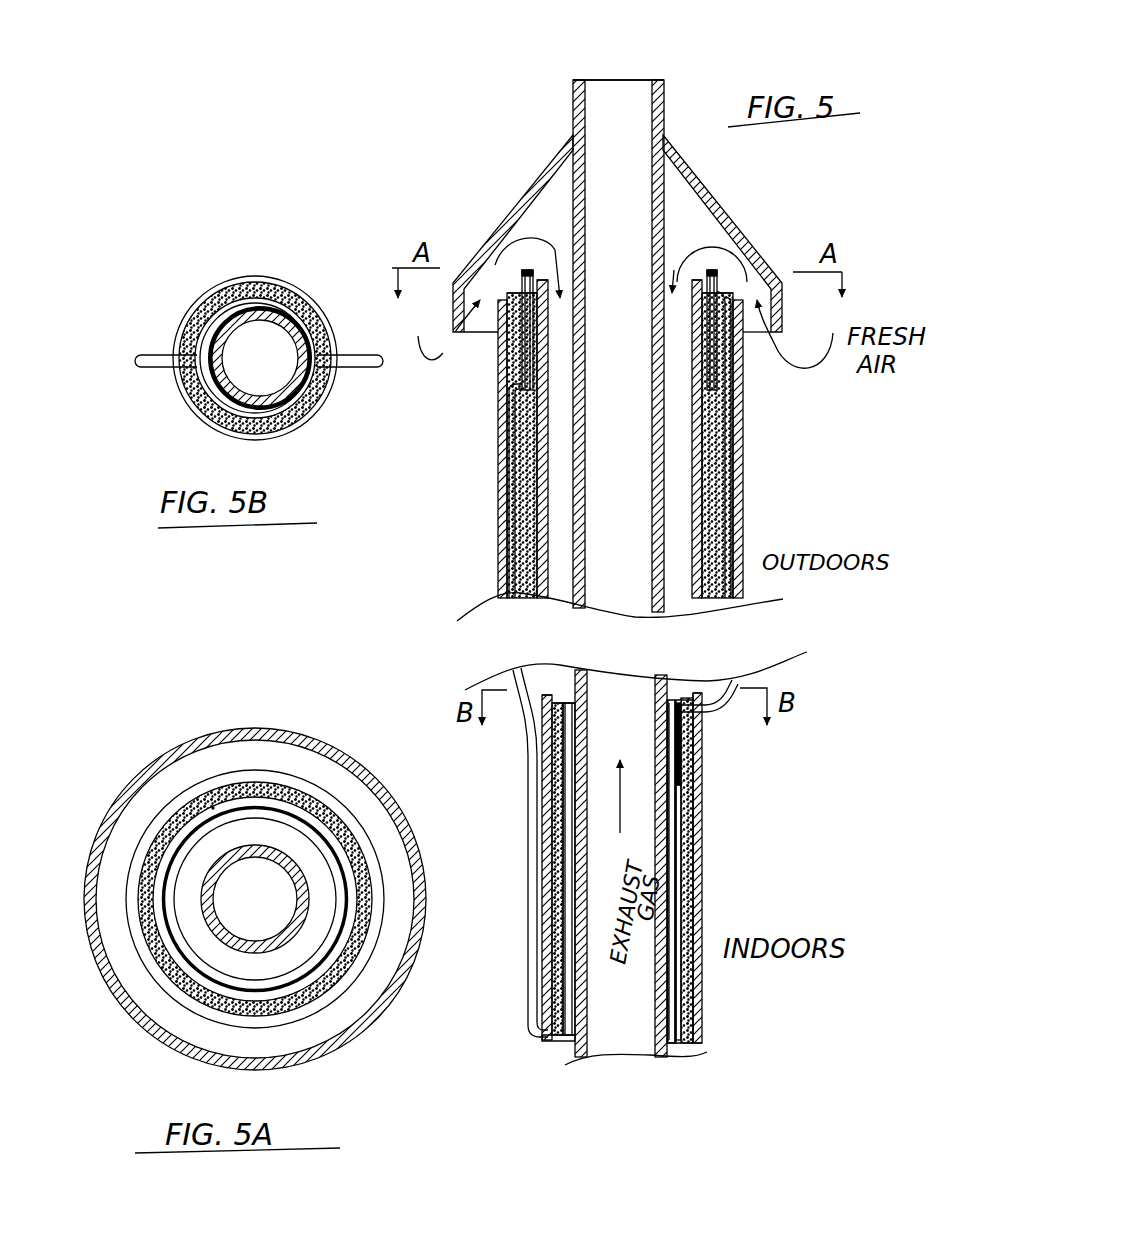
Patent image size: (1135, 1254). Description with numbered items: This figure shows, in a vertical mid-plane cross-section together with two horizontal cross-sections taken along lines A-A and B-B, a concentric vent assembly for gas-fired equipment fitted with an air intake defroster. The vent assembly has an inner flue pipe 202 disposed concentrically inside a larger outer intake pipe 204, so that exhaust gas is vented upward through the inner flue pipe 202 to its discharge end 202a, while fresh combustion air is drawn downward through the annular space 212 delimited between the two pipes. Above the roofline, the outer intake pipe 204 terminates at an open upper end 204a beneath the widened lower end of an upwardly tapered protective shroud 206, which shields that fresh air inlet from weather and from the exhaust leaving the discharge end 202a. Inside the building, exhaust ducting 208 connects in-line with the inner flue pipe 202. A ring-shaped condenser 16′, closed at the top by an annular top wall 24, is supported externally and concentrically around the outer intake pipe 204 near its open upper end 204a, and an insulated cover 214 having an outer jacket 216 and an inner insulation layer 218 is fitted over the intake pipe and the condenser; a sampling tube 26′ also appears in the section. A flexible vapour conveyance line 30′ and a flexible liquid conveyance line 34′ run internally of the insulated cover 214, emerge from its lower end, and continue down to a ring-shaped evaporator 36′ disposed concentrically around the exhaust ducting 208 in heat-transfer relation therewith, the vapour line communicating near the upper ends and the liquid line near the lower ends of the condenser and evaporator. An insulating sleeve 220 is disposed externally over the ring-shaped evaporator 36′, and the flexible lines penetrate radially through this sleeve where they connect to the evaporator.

In FIG. 5, the inner flue pipe 202 is at (661, 109).
In FIG. 5A, the inner flue pipe 202 is at (213, 910).
In FIG. 5B, the inner flue pipe 202 is at (278, 393).
In FIG. 5, the discharge end 202a is at (619, 78).
In FIG. 5, the outer intake pipe 204 is at (702, 462).
In FIG. 5A, the outer intake pipe 204 is at (213, 970).
In FIG. 5, the open upper end 204a is at (621, 254).
In FIG. 5, the protective shroud 206 is at (713, 207).
In FIG. 5A, the protective shroud 206 is at (249, 729).
In FIG. 5, the exhaust ducting 208 is at (664, 872).
In FIG. 5, the annular space 212 is at (563, 460).
In FIG. 5, the insulated cover 214 is at (494, 546).
In FIG. 5A, the insulated cover 214 is at (297, 775).
In FIG. 5, the outer jacket 216 is at (738, 400).
In FIG. 5A, the outer jacket 216 is at (320, 795).
In FIG. 5, the inner insulation layer 218 is at (715, 545).
In FIG. 5A, the inner insulation layer 218 is at (347, 822).
In FIG. 5, the insulating sleeve 220 is at (705, 892).
In FIG. 5B, the insulating sleeve 220 is at (188, 409).
In FIG. 5, the ring-shaped condenser 16′ is at (527, 345).
In FIG. 5A, the ring-shaped condenser 16′ is at (213, 806).
In FIG. 5A, the annular top wall 24 is at (347, 880).
In FIG. 5, the sampling tube 26′ is at (675, 843).
In FIG. 5, the flexible vapour conveyance line 30′ is at (729, 497).
In FIG. 5B, the flexible vapour conveyance line 30′ is at (362, 357).
In FIG. 5, the flexible liquid conveyance line 34′ is at (509, 481).
In FIG. 5B, the flexible liquid conveyance line 34′ is at (152, 356).
In FIG. 5, the ring-shaped evaporator 36′ is at (683, 783).
In FIG. 5B, the ring-shaped evaporator 36′ is at (262, 303).